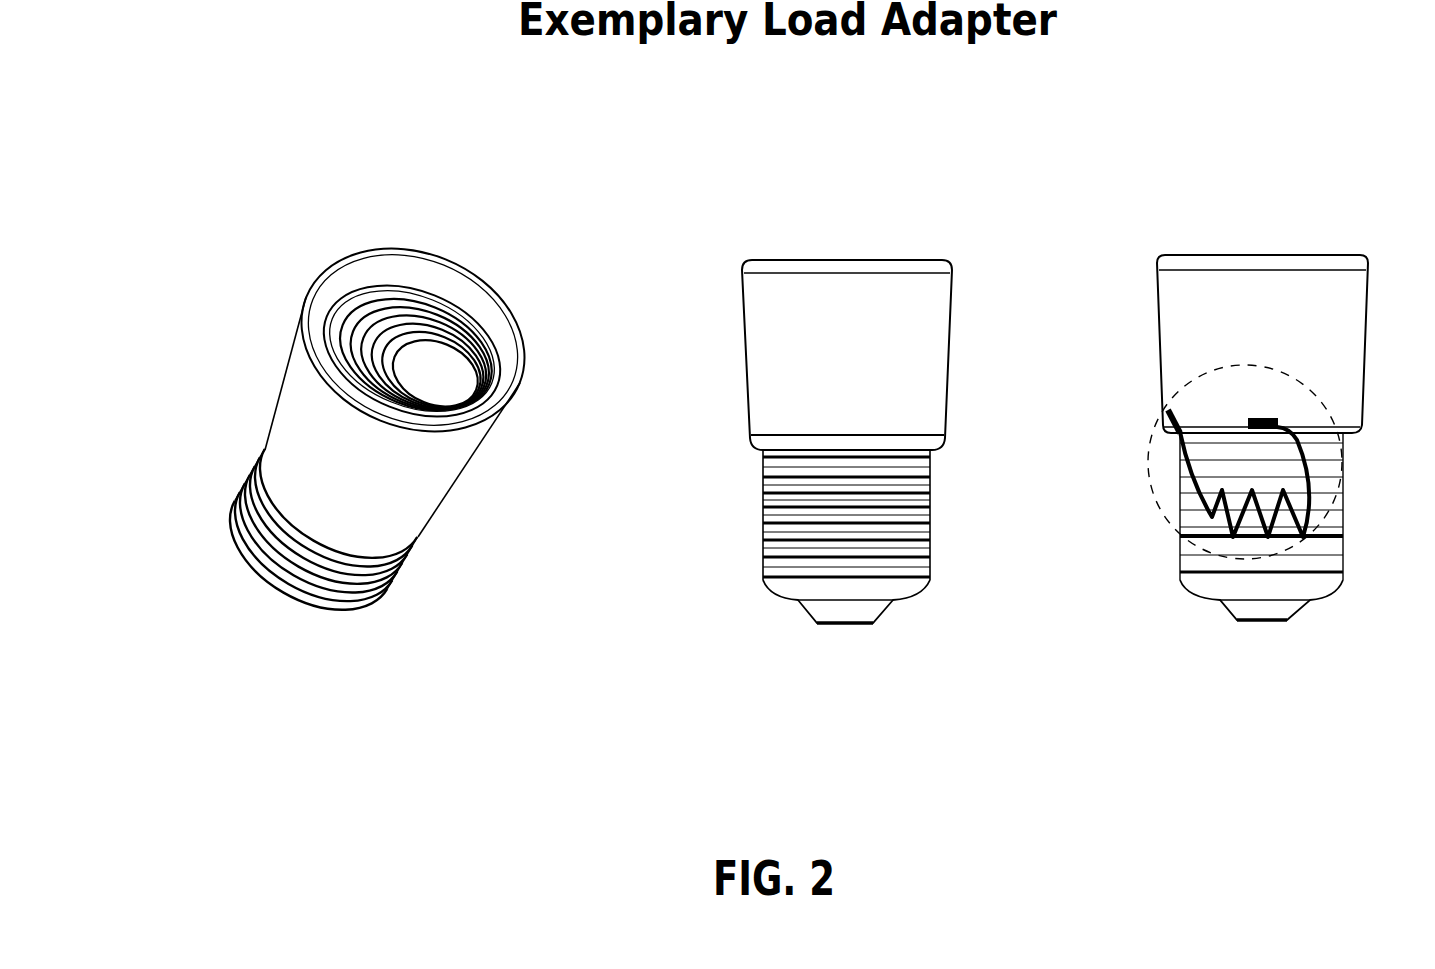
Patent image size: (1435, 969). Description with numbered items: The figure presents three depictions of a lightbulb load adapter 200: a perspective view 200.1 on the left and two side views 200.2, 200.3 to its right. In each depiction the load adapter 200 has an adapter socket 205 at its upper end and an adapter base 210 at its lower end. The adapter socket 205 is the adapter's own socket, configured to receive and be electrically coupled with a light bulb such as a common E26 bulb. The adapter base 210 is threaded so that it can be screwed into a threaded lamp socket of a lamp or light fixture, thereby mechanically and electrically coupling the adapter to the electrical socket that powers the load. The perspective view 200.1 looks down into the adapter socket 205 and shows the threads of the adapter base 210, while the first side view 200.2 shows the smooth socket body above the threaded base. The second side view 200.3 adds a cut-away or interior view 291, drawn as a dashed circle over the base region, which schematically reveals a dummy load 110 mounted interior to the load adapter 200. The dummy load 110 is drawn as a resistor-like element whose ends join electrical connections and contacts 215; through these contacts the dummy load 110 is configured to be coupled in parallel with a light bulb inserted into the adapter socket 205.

The load adapter 200 is at (219, 122).
The perspective view 200.1 is at (379, 419).
The side view 200.2 is at (643, 477).
The side view 200.3 is at (1199, 477).
The adapter socket 205 is at (787, 335).
The adapter base 210 is at (860, 545).
The electrical connections and contacts 215 is at (1302, 457).
The dummy load 110 is at (1240, 528).
The cut-away or interior view 291 is at (1277, 553).